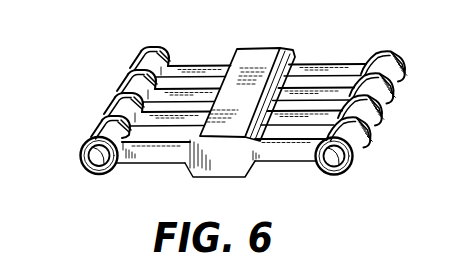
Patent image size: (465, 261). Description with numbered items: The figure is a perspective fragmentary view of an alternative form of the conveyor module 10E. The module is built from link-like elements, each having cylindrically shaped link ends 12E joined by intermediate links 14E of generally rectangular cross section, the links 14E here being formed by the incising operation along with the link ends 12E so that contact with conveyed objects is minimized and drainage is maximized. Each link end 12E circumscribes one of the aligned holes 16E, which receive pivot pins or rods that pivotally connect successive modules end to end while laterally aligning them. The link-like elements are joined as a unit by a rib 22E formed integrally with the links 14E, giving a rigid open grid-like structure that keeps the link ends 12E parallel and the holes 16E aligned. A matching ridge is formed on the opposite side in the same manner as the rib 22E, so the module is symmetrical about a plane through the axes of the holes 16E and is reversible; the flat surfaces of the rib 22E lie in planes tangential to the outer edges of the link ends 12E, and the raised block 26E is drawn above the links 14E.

The module 10E is at (221, 114).
The link ends 12E is at (84, 143).
The links 14E is at (153, 157).
The holes 16E is at (95, 165).
The rib 22E is at (223, 167).
The top block 26E is at (262, 62).